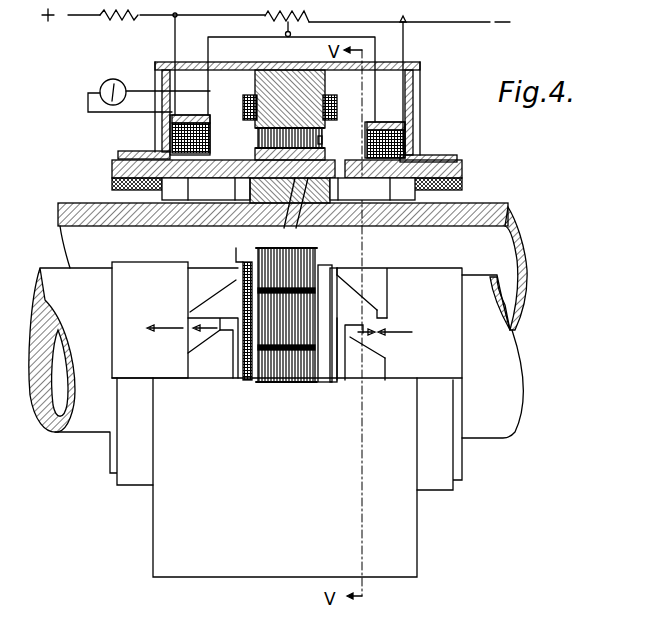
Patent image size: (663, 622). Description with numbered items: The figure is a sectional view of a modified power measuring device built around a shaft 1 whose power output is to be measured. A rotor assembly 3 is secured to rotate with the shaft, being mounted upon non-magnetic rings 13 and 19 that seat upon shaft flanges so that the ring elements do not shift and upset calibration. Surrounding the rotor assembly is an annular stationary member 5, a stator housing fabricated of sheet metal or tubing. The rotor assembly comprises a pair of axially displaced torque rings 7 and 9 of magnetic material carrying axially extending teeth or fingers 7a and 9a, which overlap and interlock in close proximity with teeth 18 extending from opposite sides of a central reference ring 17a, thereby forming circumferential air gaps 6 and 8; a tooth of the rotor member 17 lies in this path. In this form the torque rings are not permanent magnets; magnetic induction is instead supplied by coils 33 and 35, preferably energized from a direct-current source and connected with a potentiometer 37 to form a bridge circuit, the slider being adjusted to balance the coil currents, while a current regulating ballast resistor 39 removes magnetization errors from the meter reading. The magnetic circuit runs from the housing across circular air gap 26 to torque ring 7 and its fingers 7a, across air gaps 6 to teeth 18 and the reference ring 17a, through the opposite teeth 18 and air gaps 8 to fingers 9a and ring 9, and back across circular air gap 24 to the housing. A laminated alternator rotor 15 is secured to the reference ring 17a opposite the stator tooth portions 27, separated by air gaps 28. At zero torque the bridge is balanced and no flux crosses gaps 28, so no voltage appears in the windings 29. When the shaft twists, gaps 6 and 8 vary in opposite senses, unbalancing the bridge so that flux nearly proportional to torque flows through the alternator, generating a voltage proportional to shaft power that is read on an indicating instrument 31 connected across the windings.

The shaft 1 is at (520, 242).
The rotor assembly 3 is at (439, 366).
The annular stationary member 5 is at (440, 96).
The air gap 6 is at (380, 318).
The torque ring 7 is at (462, 173).
The finger portion 7a is at (352, 355).
The air gap 8 is at (186, 316).
The torque ring 9 is at (112, 166).
The finger portion 9a is at (190, 178).
The non-magnetic ring 13 is at (112, 185).
The alternator rotor 15 is at (320, 140).
The rotor member 17 is at (257, 152).
The central reference ring 17a is at (266, 229).
The teeth 18 is at (202, 302).
The non-magnetic ring 19 is at (286, 280).
The air gap 24 is at (116, 153).
The air gap 26 is at (458, 163).
The tooth portions 27 is at (294, 70).
The air gaps 28 is at (256, 130).
The windings 29 is at (250, 97).
The indicating instrument 31 is at (102, 85).
The coil 33 is at (199, 110).
The coil 35 is at (397, 122).
The potentiometer 37 is at (266, 19).
The ballast resistor 39 is at (114, 22).